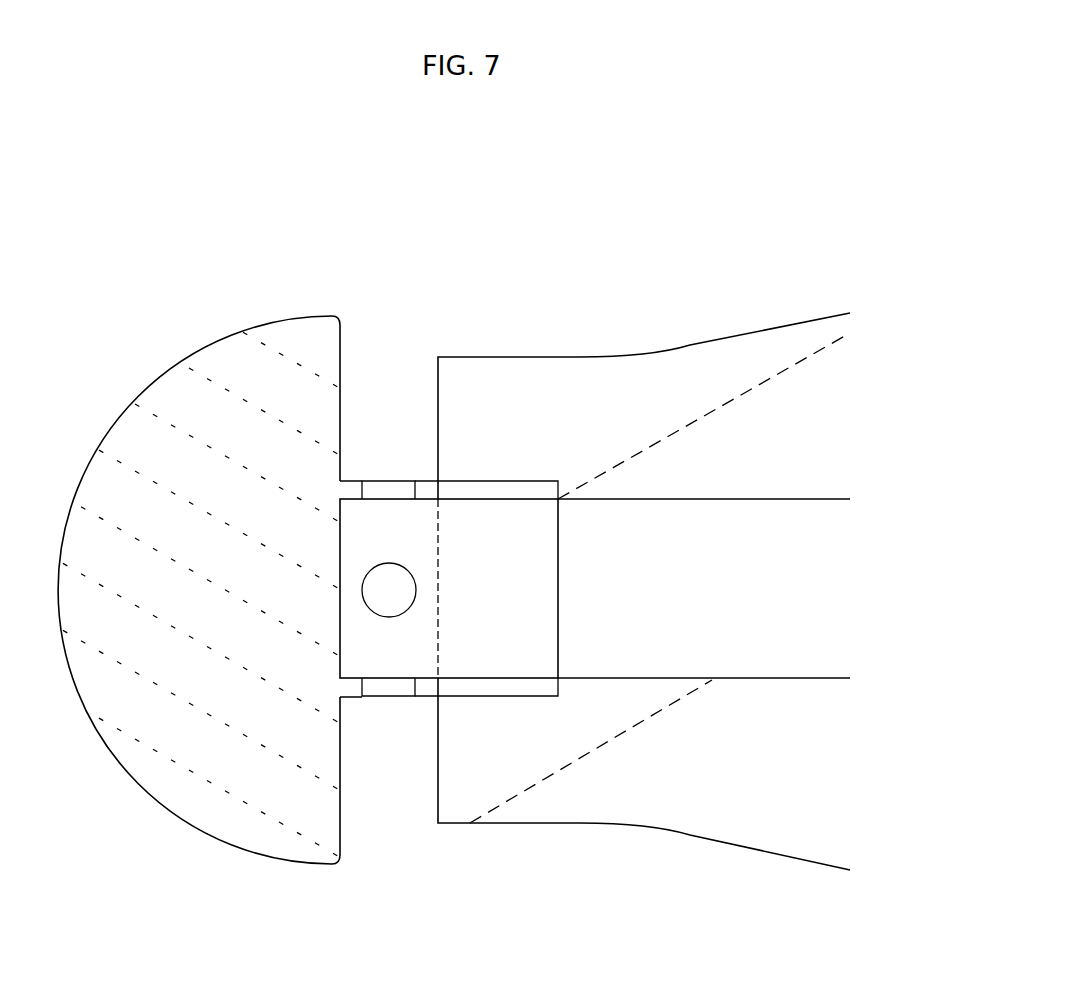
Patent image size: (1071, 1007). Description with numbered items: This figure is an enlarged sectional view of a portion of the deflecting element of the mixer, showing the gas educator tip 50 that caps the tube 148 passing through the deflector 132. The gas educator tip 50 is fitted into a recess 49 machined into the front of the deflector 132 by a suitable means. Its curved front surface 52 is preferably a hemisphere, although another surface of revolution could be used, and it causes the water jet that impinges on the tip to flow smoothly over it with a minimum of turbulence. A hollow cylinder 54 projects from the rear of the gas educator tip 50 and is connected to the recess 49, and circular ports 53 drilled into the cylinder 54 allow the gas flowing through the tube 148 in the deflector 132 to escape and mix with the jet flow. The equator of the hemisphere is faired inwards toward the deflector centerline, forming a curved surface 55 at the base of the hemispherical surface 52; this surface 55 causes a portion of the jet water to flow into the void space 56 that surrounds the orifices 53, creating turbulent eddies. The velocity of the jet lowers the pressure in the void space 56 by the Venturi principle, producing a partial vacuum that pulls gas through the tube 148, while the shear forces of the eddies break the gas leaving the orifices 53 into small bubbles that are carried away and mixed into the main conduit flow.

The recess 49 is at (468, 480).
The gas educator tip 50 is at (177, 522).
The curved front surface 52 is at (162, 377).
The circular ports 53 is at (398, 493).
The hollow cylinder 54 is at (540, 689).
The curved surface 55 is at (342, 318).
The void space 56 is at (380, 408).
The deflector 132 is at (773, 397).
The tube 148 is at (780, 678).